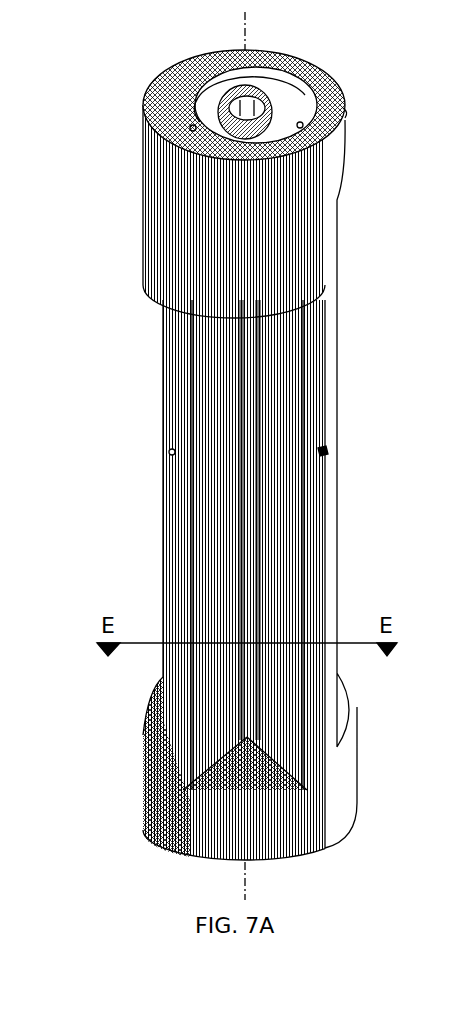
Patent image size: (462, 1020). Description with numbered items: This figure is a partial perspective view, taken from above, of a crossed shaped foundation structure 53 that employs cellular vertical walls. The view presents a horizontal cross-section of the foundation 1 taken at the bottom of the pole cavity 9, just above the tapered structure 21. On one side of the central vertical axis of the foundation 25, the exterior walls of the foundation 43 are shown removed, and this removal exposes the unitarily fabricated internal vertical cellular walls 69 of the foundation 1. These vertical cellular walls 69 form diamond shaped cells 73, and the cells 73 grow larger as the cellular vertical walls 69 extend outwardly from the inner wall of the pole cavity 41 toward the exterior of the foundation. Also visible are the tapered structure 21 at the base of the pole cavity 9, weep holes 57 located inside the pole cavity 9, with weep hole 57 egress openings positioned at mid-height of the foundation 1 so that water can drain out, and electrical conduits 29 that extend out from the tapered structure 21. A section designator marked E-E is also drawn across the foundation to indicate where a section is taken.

The foundation 1 is at (109, 94).
The pole cavity 9 is at (290, 106).
The tapered structure 21 is at (143, 128).
The central vertical axis of the foundation 25 is at (249, 31).
The electrical conduits 29 is at (238, 95).
The inner wall of the pole cavity 41 is at (310, 67).
The exterior walls of the foundation 43 is at (345, 213).
The crossed shaped foundation structure 53 is at (188, 507).
The weep holes 57 is at (350, 113).
The vertical cellular walls 69 is at (188, 388).
The diamond shaped cells 73 is at (150, 700).